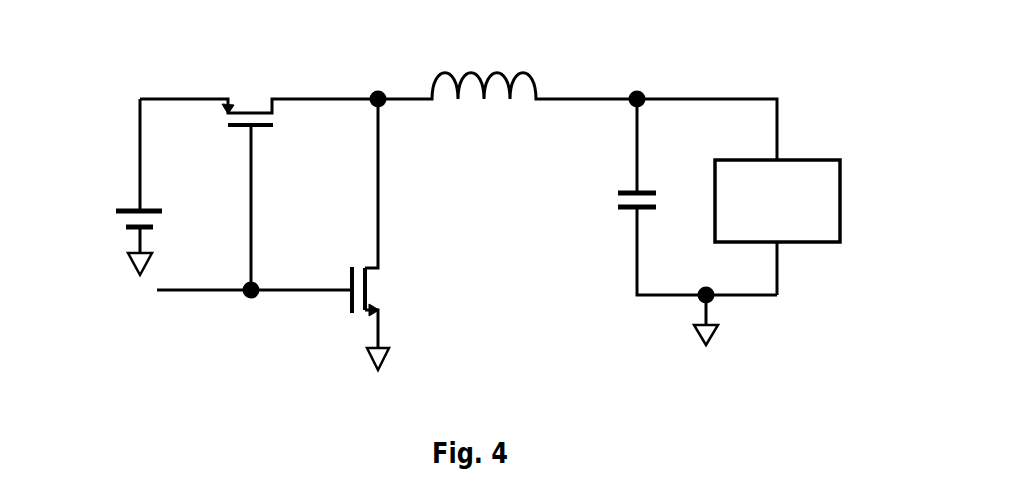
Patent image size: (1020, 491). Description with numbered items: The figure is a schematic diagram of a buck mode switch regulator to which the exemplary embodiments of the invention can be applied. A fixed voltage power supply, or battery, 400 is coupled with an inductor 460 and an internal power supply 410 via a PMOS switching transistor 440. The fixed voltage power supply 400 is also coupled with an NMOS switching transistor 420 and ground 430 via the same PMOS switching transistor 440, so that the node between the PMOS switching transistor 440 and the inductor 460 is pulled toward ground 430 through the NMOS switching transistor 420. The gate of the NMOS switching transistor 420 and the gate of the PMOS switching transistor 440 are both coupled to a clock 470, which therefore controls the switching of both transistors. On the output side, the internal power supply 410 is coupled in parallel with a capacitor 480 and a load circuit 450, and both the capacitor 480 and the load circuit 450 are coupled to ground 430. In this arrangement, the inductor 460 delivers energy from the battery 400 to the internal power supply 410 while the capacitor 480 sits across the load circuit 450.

The fixed voltage power supply 400 is at (115, 212).
The internal power supply 410 is at (665, 63).
The NMOS switching transistor 420 is at (383, 266).
The ground 430 is at (387, 360).
The PMOS switching transistor 440 is at (256, 68).
The load circuit 450 is at (843, 162).
The inductor 460 is at (497, 75).
The clock 470 is at (262, 281).
The capacitor 480 is at (621, 190).